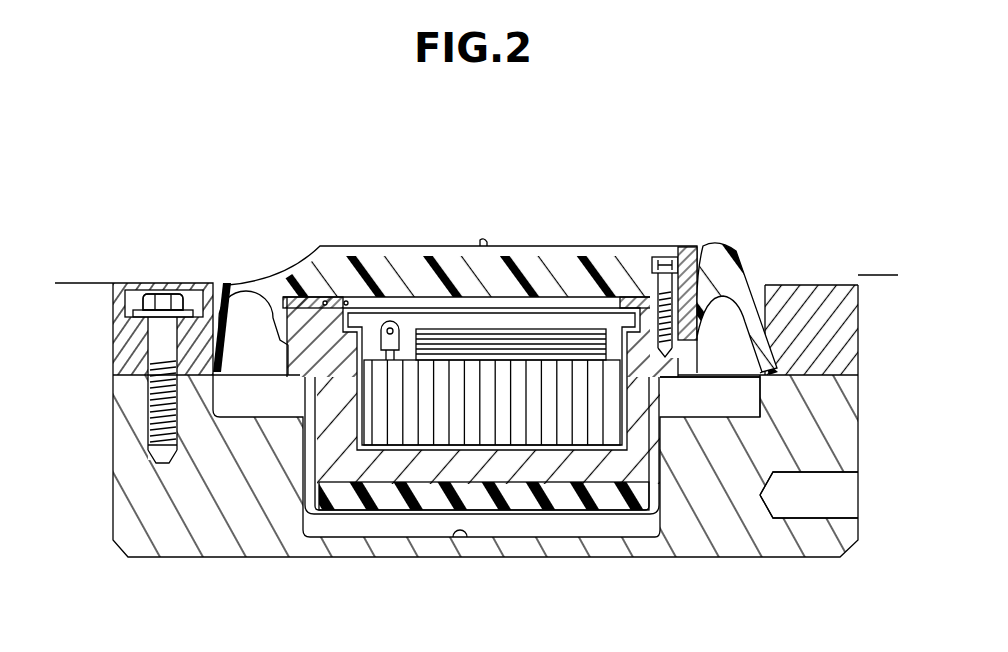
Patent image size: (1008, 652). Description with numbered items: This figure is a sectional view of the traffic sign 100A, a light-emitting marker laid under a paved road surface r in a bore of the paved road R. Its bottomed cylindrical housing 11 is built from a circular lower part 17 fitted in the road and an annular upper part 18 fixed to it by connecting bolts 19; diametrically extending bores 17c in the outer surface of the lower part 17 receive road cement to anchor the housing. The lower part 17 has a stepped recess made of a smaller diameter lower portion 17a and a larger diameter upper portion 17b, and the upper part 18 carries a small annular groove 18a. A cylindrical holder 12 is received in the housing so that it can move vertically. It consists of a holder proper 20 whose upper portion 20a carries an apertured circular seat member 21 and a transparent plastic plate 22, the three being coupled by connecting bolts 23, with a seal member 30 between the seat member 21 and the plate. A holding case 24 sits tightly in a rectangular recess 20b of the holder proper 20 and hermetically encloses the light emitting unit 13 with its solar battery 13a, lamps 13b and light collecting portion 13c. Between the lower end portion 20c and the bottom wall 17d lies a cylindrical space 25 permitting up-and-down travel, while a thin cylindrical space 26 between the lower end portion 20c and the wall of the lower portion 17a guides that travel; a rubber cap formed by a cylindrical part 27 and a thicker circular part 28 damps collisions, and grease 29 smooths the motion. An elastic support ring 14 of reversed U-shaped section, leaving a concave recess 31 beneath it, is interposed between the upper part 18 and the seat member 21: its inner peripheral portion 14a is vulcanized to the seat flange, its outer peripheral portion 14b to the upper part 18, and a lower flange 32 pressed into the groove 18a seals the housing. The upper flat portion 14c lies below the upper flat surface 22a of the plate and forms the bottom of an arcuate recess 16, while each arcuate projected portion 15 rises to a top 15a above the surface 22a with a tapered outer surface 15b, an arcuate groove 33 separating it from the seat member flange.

The traffic sign 100A is at (628, 89).
The housing 11 is at (862, 416).
The holder 12 is at (668, 397).
The light emitting unit 13 is at (565, 320).
The solar battery 13a is at (550, 430).
The lamps 13b is at (389, 318).
The light collecting portion 13c is at (535, 345).
The elastic support ring 14 is at (212, 286).
The inner peripheral portion 14a is at (265, 292).
The outer peripheral portion 14b is at (118, 377).
The upper flat portion 14c is at (250, 284).
The arcuate projected portion 15 is at (300, 300).
The top 15a is at (337, 304).
The tapered outer surface 15b is at (747, 250).
The arcuate recess 16 is at (486, 245).
The circular lower part 17 is at (733, 540).
The smaller diameter lower portion 17a is at (300, 556).
The larger diameter upper portion 17b is at (237, 391).
The diametrically extending bores 17c is at (823, 515).
The bottom wall 17d is at (462, 540).
The annular upper part 18 is at (128, 330).
The annular groove 18a is at (150, 433).
The connecting bolts 19 is at (158, 295).
The holder proper 20 is at (620, 543).
The upper portion 20a is at (286, 350).
The rectangular recess 20b is at (345, 480).
The lower end portion 20c is at (337, 548).
The apertured circular seat member 21 is at (323, 300).
The transparent plastic plate 22 is at (497, 272).
The upper flat surface 22a is at (528, 275).
The connecting bolts 23 is at (664, 257).
The holding case 24 is at (510, 455).
The cylindrical space 25 is at (423, 524).
The thin cylindrical space 26 is at (658, 520).
The cylindrical part 27 is at (667, 458).
The circular part 28 is at (588, 512).
The grease 29 is at (303, 476).
The seal member 30 is at (345, 300).
The concave recess 31 is at (203, 283).
The lower flange 32 is at (773, 362).
The arcuate groove 33 is at (700, 283).
The paved road R is at (55, 351).
The paved road surface r is at (72, 283).